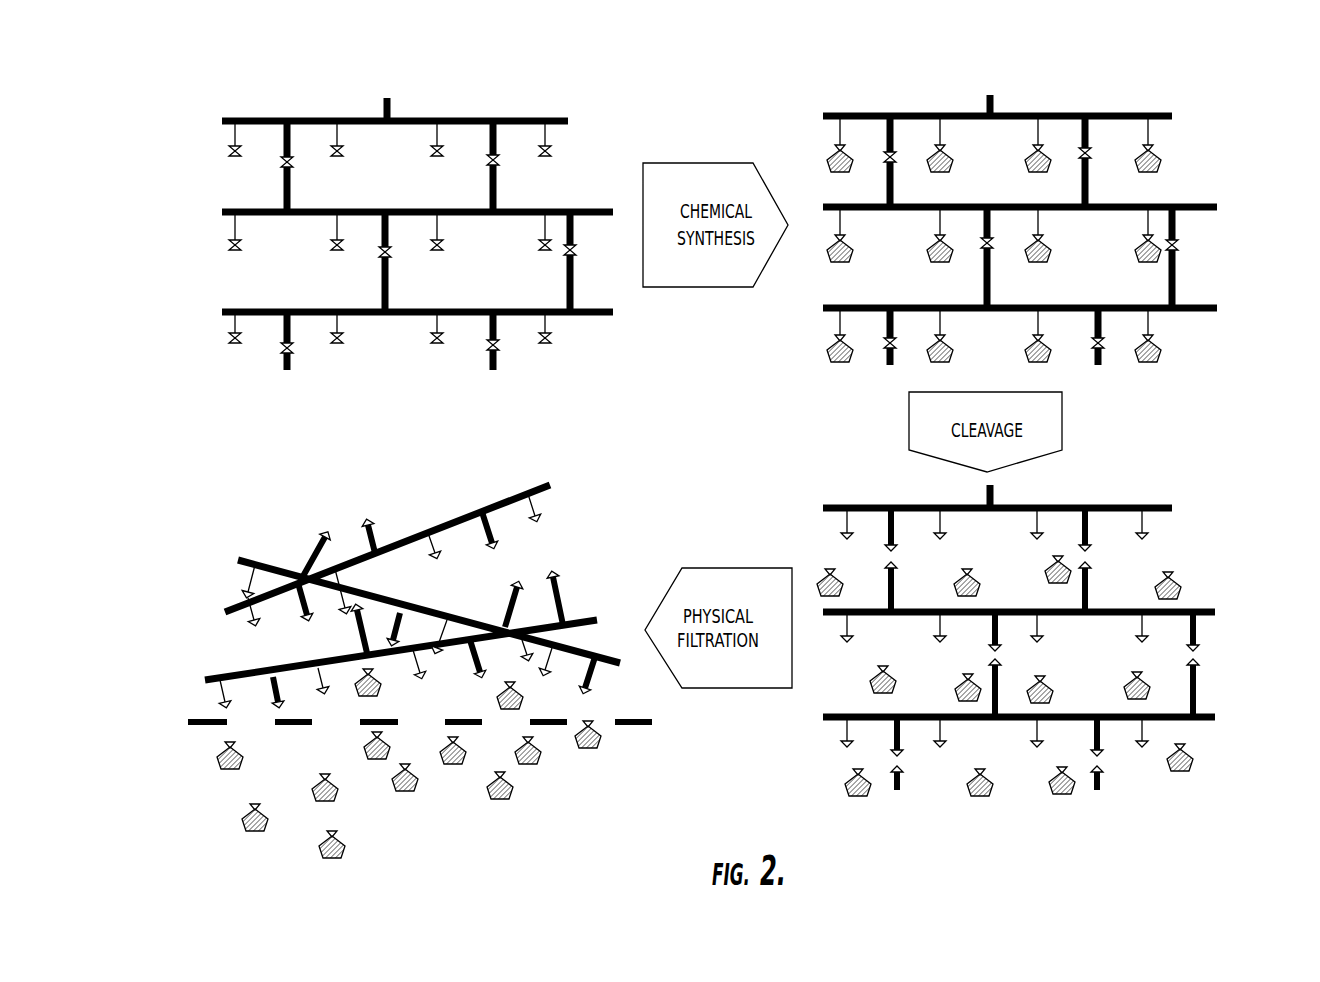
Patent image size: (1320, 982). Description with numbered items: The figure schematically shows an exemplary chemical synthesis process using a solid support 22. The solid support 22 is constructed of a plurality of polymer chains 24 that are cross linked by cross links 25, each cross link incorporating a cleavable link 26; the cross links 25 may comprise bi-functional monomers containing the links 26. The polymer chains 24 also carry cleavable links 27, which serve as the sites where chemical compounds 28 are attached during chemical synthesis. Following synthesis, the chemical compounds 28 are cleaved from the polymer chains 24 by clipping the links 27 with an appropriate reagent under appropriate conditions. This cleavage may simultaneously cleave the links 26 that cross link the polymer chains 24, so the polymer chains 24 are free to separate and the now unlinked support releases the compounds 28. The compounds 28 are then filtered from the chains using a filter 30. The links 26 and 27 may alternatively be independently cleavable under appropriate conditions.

The solid support 22 is at (726, 465).
The polymer chains 24 is at (463, 118).
The cross links 25 is at (293, 145).
The cleavable links 26 is at (497, 162).
The cleavable links 27 is at (285, 162).
The chemical compounds 28 is at (932, 358).
The filter 30 is at (553, 725).